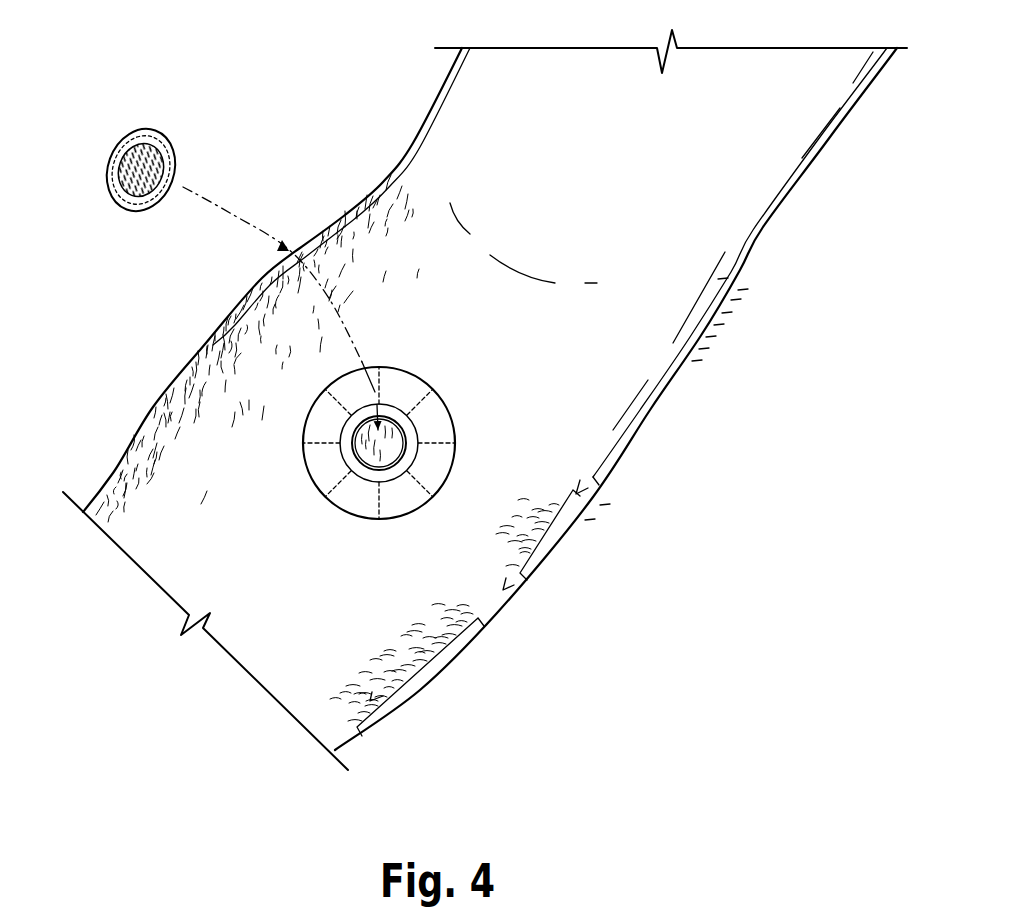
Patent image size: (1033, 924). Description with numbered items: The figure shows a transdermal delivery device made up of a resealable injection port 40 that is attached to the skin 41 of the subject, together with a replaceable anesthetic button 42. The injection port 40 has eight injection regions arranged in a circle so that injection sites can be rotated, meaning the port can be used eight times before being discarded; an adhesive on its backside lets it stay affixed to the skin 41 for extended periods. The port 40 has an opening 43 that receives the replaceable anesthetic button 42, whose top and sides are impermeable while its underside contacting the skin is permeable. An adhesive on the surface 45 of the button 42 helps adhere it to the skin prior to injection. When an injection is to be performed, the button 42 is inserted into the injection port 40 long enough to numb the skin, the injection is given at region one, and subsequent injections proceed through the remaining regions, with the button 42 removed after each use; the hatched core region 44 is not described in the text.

The resealable injection port 40 is at (412, 418).
The skin 41 is at (643, 333).
The replaceable anesthetic button 42 is at (114, 184).
The opening 43 is at (397, 447).
The hatched pad core 44 is at (137, 183).
The surface of the button 45 is at (118, 157).